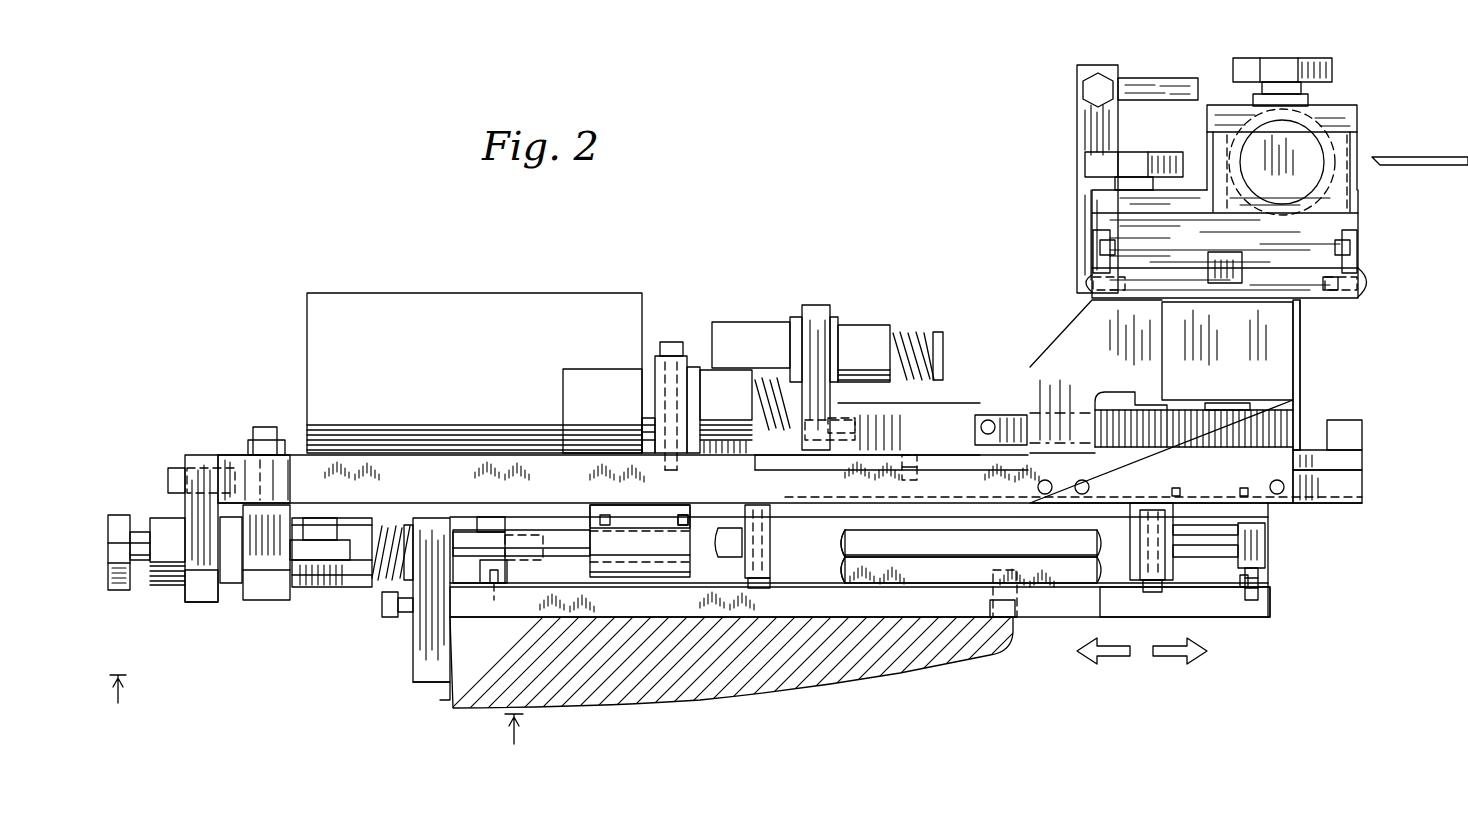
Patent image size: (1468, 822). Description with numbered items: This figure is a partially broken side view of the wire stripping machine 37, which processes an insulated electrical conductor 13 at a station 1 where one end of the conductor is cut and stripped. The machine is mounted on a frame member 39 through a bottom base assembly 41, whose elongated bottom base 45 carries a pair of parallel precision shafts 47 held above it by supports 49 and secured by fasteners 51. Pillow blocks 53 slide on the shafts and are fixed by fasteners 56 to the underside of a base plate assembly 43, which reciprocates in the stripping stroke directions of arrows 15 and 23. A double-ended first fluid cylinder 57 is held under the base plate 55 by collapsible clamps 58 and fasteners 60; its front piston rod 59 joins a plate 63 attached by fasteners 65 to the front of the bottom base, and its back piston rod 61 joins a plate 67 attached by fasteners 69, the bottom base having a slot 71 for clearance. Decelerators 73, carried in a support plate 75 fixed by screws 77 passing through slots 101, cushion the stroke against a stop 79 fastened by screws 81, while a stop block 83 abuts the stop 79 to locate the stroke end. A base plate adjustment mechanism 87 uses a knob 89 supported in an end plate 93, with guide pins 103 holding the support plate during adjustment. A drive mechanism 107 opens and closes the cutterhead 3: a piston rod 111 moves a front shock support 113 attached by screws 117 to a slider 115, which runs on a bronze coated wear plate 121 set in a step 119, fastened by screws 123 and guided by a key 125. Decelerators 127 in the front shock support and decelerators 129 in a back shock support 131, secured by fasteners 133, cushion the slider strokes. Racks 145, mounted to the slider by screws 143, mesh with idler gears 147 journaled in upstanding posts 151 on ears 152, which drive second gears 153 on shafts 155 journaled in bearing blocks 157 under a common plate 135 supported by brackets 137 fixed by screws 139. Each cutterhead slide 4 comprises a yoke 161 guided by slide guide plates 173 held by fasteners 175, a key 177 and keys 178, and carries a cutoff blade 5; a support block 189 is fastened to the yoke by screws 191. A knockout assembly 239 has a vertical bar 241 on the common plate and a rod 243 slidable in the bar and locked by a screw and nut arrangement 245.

The station 1 is at (1400, 184).
The cutterhead 3 is at (1380, 80).
The cutterhead slide 4 is at (1305, 46).
The cutoff blade 5 is at (316, 721).
The insulated electrical conductor 13 is at (1459, 145).
The arrow 15 is at (1180, 654).
The arrow 23 is at (1112, 654).
The wire stripping machine 37 is at (755, 273).
The frame member 39 is at (668, 688).
The bottom base assembly 41 is at (1069, 630).
The base plate assembly 43 is at (1366, 500).
The bottom base 45 is at (610, 613).
The precision shafts 47 is at (465, 530).
The supports 49 is at (685, 576).
The fasteners 51 is at (1010, 618).
The pillow blocks 53 is at (605, 514).
The base plate 55 is at (1348, 488).
The fasteners 56 is at (683, 514).
The first fluid cylinder 57 is at (848, 580).
The collapsible clamps 58 is at (772, 508).
The front piston rod 59 is at (1262, 570).
The fasteners 60 is at (1020, 612).
The back piston rod 61 is at (728, 528).
The plate 63 is at (1270, 560).
The fasteners 65 is at (1272, 600).
The plate 67 is at (495, 522).
The fasteners 69 is at (432, 684).
The slot 71 is at (500, 585).
The decelerators 73 is at (345, 598).
The support plate 75 is at (270, 592).
The screws 77 is at (263, 428).
The stop 79 is at (415, 662).
The screws 81 is at (392, 618).
The stop block 83 is at (315, 598).
The base plate adjustment mechanism 87 is at (158, 606).
The knob 89 is at (118, 590).
The end plate 93 is at (205, 592).
The slots 101 is at (300, 452).
The guide pins 103 is at (240, 560).
The drive mechanism 107 is at (1007, 361).
The piston rod 111 is at (715, 335).
The front shock support 113 is at (818, 306).
The slider 115 is at (922, 422).
The screws 117 is at (855, 420).
The step 119 is at (868, 460).
The wear plate 121 is at (1355, 460).
The screws 123 is at (918, 462).
The key 125 is at (1312, 445).
The decelerators 127 is at (860, 328).
The decelerators 129 is at (566, 388).
The back shock support 131 is at (660, 356).
The fasteners 133 is at (672, 346).
The common plate 135 is at (1305, 300).
The brackets 137 is at (1078, 318).
The screws 139 is at (1036, 487).
The screws 143 is at (990, 420).
The racks 145 is at (1018, 414).
The idler gear 147 is at (1140, 416).
The upstanding posts 151 is at (1130, 500).
The ears 152 is at (1165, 588).
The second gears 153 is at (1225, 420).
The shaft 155 is at (1252, 408).
The bearing block 157 is at (1255, 355).
The yoke 161 is at (1372, 225).
The slide guide plates 173 is at (1100, 236).
The fasteners 175 is at (1085, 282).
The key 177 is at (1100, 247).
The keys 178 is at (1244, 262).
The support block 189 is at (1322, 202).
The screws 191 is at (1345, 158).
The knockout assembly 239 is at (1065, 111).
The vertical bar 241 is at (1082, 140).
The rod 243 is at (1190, 80).
The screw and nut arrangement 245 is at (1102, 75).